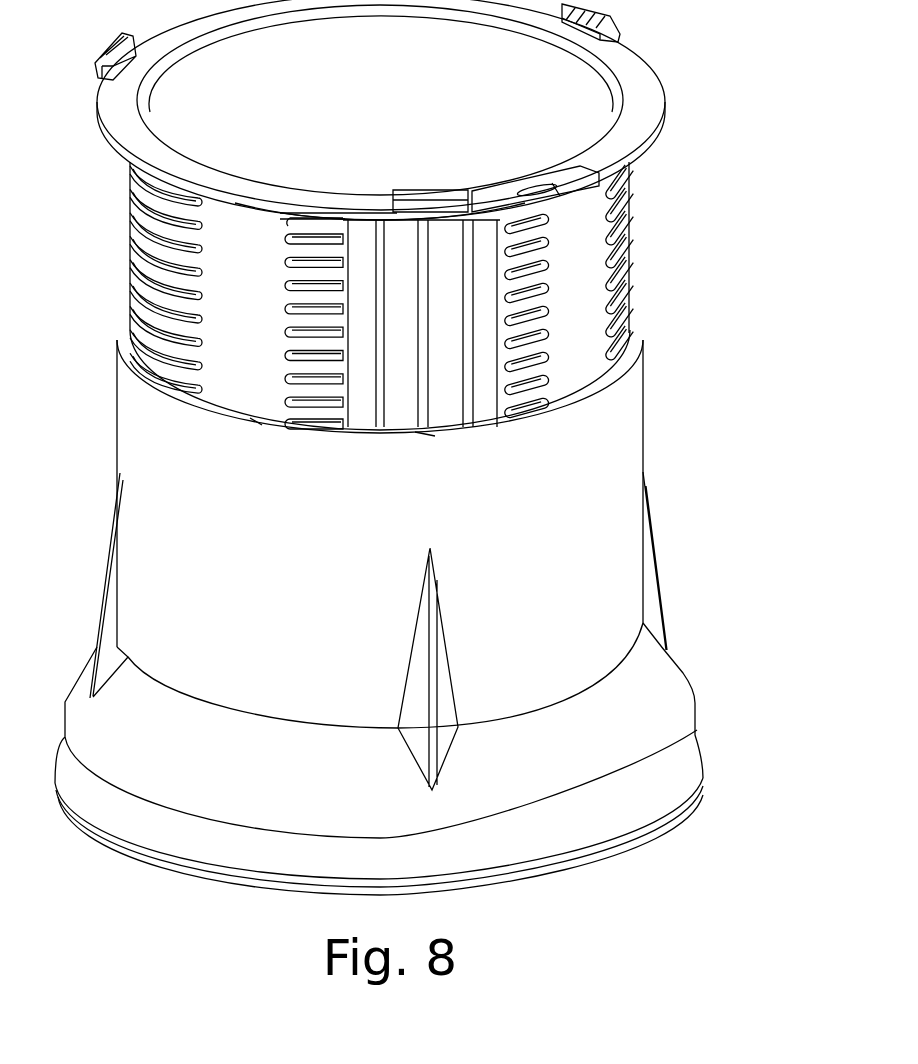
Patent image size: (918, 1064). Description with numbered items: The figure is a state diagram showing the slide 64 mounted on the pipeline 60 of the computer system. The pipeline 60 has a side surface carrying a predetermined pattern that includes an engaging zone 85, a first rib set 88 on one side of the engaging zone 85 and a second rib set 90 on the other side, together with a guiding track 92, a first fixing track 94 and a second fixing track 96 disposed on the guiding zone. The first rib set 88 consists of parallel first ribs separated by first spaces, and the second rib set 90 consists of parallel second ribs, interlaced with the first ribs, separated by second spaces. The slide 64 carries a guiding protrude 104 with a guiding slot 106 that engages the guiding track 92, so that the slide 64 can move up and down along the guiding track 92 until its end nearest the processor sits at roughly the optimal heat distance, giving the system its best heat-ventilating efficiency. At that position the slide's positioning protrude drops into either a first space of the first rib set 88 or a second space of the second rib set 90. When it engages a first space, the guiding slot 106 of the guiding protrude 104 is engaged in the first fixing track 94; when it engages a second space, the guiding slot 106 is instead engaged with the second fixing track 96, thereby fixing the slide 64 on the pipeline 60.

The pipeline 60 is at (568, 258).
The slide 64 is at (130, 445).
The engaging zone 85 is at (222, 387).
The first rib set 88 is at (147, 271).
The second rib set 90 is at (318, 405).
The guiding track 92 is at (427, 260).
The first fixing track 94 is at (397, 430).
The second fixing track 96 is at (467, 427).
The guiding protrude 104 is at (440, 433).
The guiding slot 106 is at (262, 425).